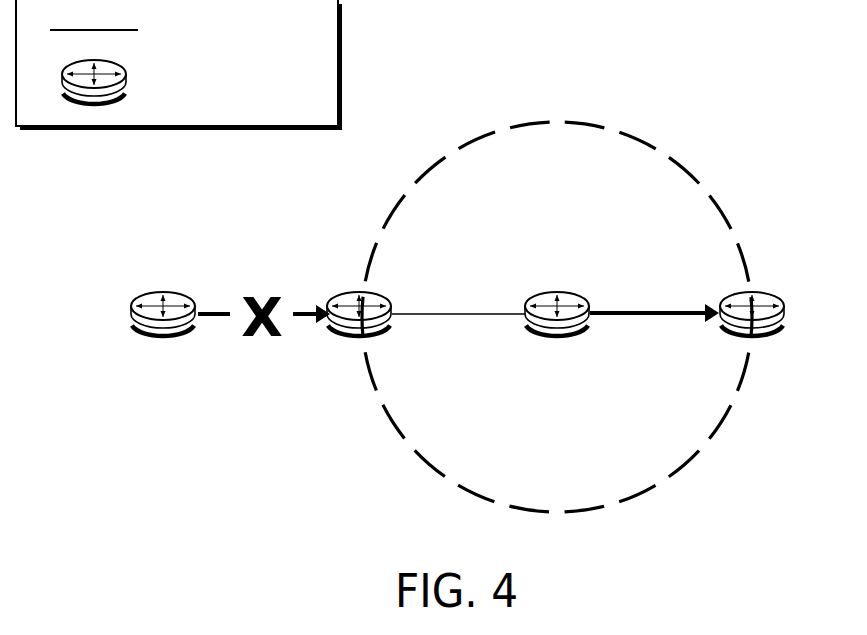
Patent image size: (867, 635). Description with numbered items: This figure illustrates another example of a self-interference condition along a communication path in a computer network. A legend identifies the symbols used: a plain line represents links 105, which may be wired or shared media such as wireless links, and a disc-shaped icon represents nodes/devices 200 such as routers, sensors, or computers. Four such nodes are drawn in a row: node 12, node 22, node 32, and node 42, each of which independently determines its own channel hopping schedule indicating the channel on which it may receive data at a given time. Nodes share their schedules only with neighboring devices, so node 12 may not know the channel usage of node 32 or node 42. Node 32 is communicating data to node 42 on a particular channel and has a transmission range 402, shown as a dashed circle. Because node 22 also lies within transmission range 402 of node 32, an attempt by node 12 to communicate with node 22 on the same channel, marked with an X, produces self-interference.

The node 12 is at (163, 333).
The node 22 is at (355, 333).
The node 32 is at (557, 333).
The node 42 is at (754, 333).
The links 105 is at (167, 30).
The nodes/devices 200 is at (182, 82).
The transmission range 402 is at (656, 144).